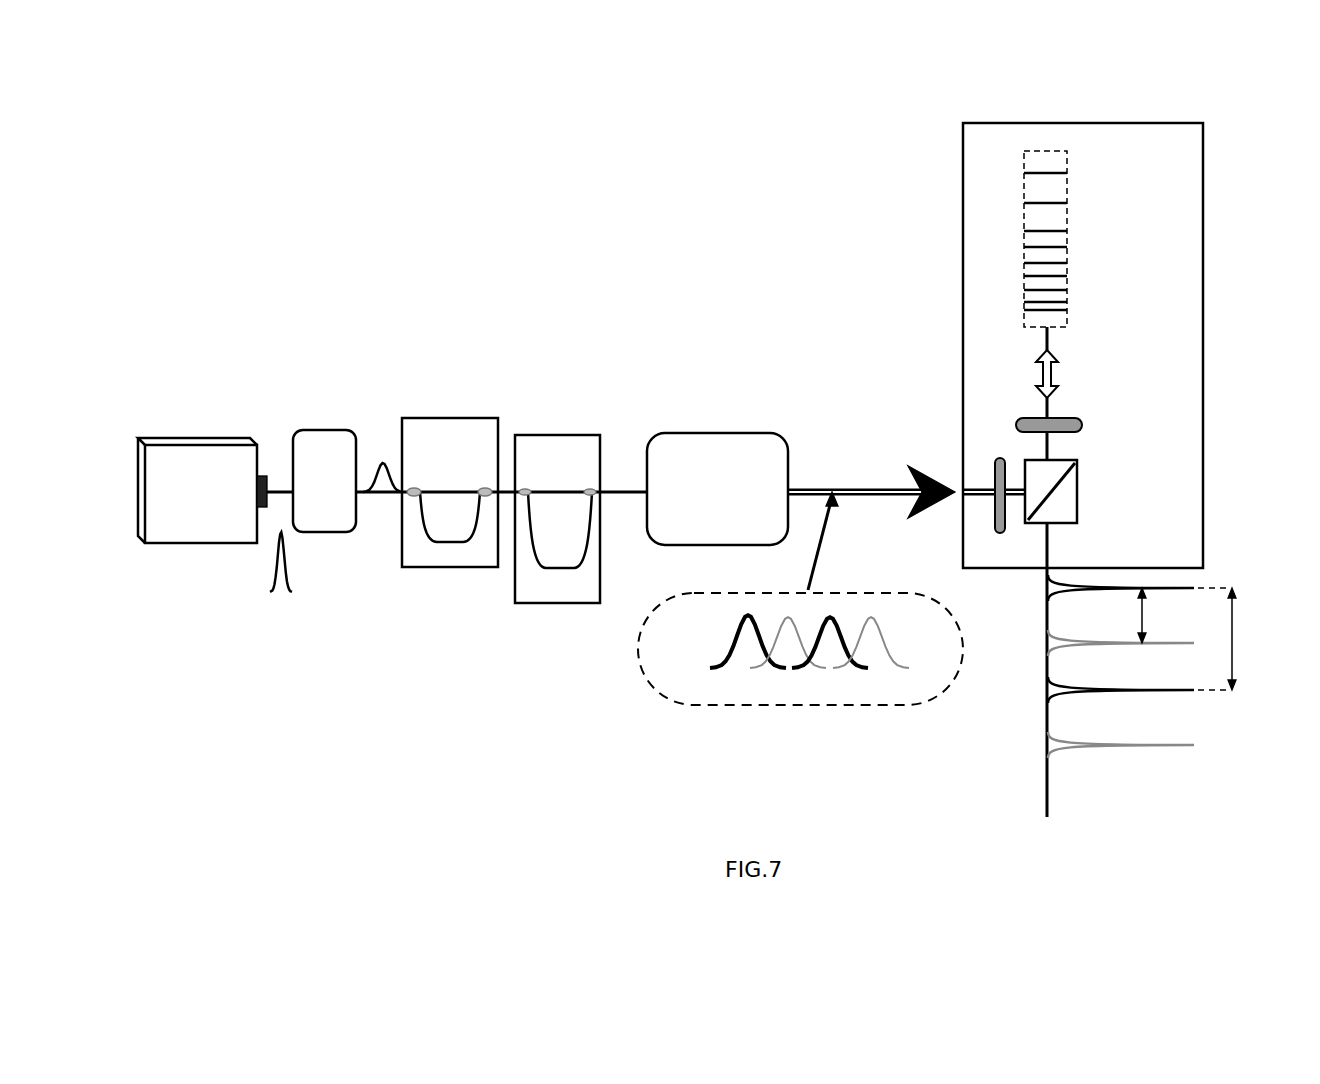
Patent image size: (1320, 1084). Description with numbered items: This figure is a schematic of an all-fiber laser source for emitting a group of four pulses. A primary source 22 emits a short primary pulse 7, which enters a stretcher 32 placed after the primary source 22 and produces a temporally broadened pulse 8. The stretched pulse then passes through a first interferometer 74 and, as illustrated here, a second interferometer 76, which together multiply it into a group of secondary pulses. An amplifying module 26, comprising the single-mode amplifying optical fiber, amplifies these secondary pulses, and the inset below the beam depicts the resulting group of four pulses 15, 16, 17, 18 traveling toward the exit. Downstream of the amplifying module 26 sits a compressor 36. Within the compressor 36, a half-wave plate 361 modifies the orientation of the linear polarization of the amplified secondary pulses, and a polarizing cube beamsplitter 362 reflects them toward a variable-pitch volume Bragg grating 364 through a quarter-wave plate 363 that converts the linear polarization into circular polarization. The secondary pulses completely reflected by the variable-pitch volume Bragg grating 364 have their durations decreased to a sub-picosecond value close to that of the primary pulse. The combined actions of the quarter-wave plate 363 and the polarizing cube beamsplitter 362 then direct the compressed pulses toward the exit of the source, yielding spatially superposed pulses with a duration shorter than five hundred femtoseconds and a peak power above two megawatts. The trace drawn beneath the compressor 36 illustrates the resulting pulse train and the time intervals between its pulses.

The primary source 22 is at (202, 490).
The initial light pulse 7 is at (283, 596).
The stretcher 32 is at (313, 430).
The broadened light pulse 8 is at (382, 462).
The first interferometer 74 is at (433, 568).
The second interferometer 76 is at (565, 435).
The amplifying module 26 is at (735, 433).
The first pulse 15 is at (740, 642).
The second pulse 16 is at (792, 620).
The third pulse 17 is at (828, 620).
The fourth pulse 18 is at (882, 642).
The compressor 36 is at (1114, 470).
The half-wave plate 361 is at (1000, 458).
The polarizing cube beamsplitter 362 is at (1078, 494).
The lens 363 is at (1082, 425).
The variable-pitch volume Bragg grating 364 is at (1067, 231).